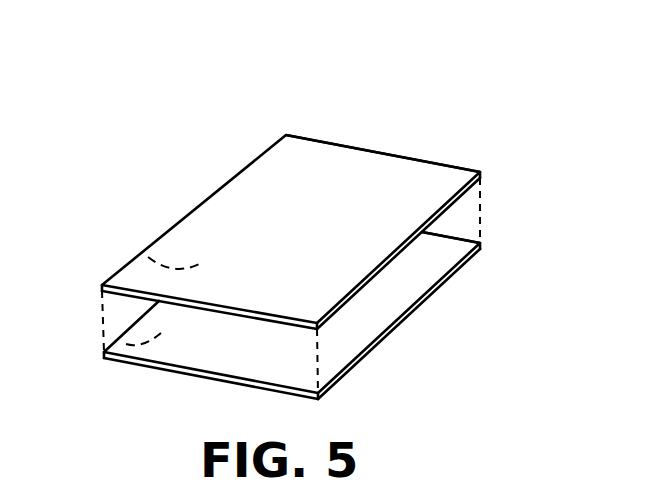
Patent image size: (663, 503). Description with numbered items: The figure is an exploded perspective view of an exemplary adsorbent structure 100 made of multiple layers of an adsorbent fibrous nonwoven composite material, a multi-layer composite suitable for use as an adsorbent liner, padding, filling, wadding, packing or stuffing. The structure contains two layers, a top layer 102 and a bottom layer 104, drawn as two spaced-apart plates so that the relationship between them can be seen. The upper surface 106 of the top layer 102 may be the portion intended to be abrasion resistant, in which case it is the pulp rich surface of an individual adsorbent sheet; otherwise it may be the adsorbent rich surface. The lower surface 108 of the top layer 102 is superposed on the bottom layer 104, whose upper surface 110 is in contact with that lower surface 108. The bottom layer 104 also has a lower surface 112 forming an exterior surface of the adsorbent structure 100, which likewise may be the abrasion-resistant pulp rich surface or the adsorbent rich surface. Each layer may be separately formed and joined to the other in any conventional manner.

The adsorbent structure 100 is at (201, 82).
The top layer 102 is at (313, 242).
The bottom layer 104 is at (276, 358).
The upper surface 106 is at (438, 177).
The lower surface 108 is at (145, 257).
The upper surface 110 is at (455, 250).
The lower surface 112 is at (115, 348).